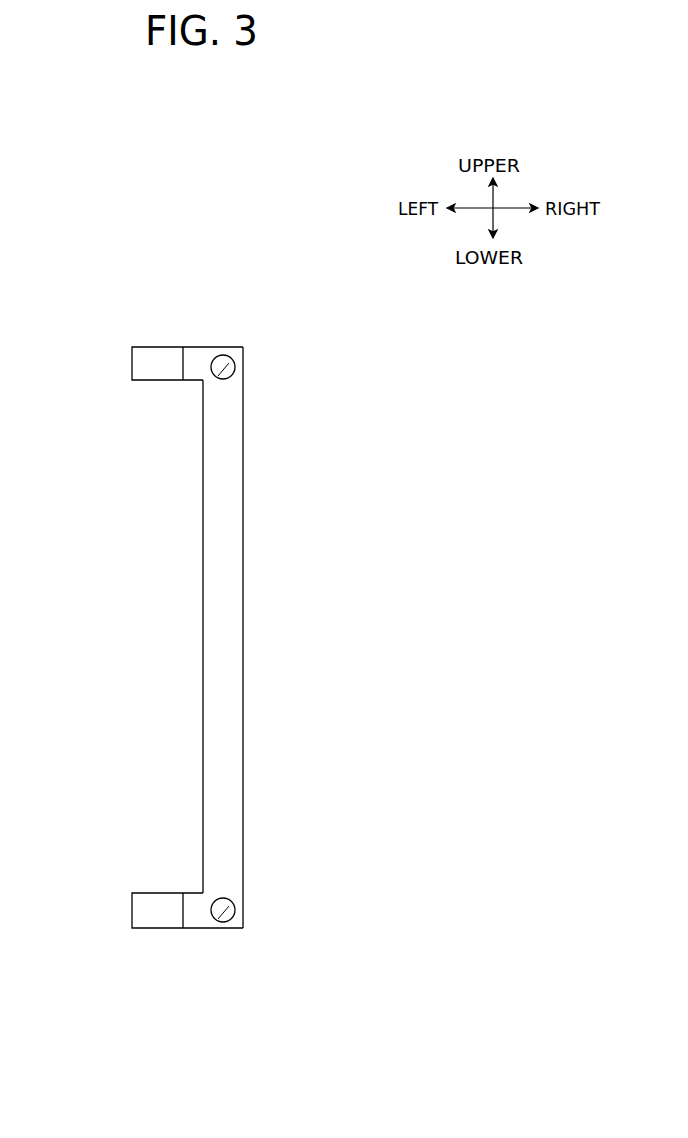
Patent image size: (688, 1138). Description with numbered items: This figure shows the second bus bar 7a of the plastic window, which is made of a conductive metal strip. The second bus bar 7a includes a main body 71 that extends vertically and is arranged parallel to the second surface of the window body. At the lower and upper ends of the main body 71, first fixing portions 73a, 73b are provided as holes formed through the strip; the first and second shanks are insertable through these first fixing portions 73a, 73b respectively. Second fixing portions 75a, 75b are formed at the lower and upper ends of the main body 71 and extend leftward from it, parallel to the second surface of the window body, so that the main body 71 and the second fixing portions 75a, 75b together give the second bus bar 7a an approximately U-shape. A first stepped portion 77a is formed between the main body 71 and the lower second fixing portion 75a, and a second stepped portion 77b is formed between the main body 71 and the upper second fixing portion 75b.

The second bus bar 7a is at (245, 336).
The main body 71 is at (229, 633).
The first fixing portion 73a is at (236, 909).
The first fixing portion 73b is at (236, 364).
The second fixing portion 75a is at (142, 910).
The second fixing portion 75b is at (142, 360).
The first stepped portion 77a is at (183, 912).
The second stepped portion 77b is at (183, 367).